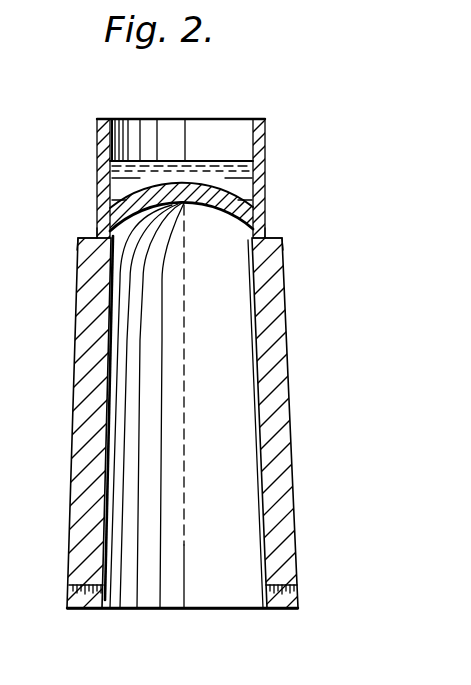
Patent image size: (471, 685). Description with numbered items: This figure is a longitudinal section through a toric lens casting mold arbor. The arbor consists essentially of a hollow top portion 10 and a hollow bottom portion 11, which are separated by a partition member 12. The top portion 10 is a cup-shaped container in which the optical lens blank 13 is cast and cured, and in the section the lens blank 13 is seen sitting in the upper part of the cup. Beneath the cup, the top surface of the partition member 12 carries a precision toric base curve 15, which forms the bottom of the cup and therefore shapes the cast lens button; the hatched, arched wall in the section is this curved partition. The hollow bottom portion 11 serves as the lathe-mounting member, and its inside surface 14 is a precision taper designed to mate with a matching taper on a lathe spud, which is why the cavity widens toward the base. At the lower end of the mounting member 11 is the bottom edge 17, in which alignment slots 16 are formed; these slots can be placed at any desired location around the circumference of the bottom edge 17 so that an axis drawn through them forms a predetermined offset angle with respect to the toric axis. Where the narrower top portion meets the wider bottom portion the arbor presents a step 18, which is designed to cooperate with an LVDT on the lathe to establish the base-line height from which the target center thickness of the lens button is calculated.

The hollow top portion 10 is at (266, 136).
The hollow bottom portion 11 is at (291, 433).
The partition member 12 is at (207, 198).
The optical lens blank 13 is at (190, 172).
The inside surface 14 is at (117, 405).
The toric base curve 15 is at (147, 192).
The alignment slots 16 is at (82, 598).
The bottom edge 17 is at (280, 610).
The step 18 is at (271, 240).